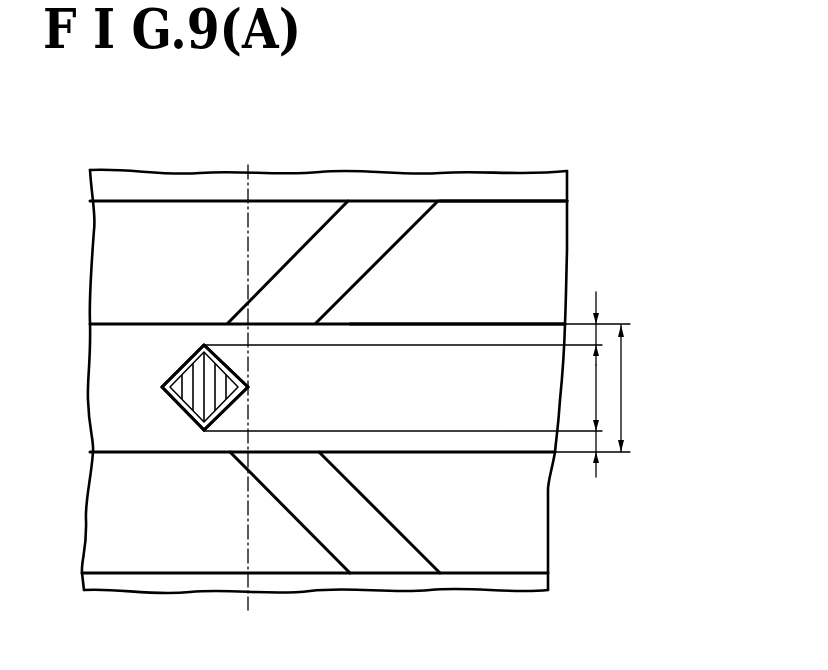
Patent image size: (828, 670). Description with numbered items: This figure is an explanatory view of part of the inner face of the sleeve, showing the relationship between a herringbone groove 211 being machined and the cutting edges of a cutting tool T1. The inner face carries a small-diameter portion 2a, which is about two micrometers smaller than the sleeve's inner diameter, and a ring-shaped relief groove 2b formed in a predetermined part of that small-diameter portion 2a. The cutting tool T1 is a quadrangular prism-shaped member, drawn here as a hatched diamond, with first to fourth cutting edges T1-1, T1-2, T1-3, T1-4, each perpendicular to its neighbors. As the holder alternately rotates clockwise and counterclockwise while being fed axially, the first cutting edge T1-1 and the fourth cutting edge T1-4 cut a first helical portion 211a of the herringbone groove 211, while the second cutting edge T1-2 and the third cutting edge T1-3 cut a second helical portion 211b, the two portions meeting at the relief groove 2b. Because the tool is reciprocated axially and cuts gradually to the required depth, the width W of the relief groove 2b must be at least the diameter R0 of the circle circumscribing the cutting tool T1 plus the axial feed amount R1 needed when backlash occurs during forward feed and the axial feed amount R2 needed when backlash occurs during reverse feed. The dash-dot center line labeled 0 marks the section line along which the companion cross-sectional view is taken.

The herringbone groove 211 is at (683, 183).
The first helical portion 211a is at (378, 225).
The second helical portion 211b is at (377, 537).
The small-diameter portion 2a is at (493, 215).
The relief groove 2b is at (448, 332).
The cutting tool T1 is at (195, 338).
The first cutting edge T1-1 is at (182, 407).
The second cutting edge T1-2 is at (236, 414).
The third cutting edge T1-3 is at (172, 377).
The fourth cutting edge T1-4 is at (237, 370).
The amount of axial feed on reverse backlash R2 is at (596, 337).
The amount of axial feed on forward backlash R1 is at (600, 437).
The diameter of the circumscribed circle of the cutting tool R0 is at (598, 390).
The width of the relief groove W is at (622, 390).
The section line O—O 0 is at (248, 388).